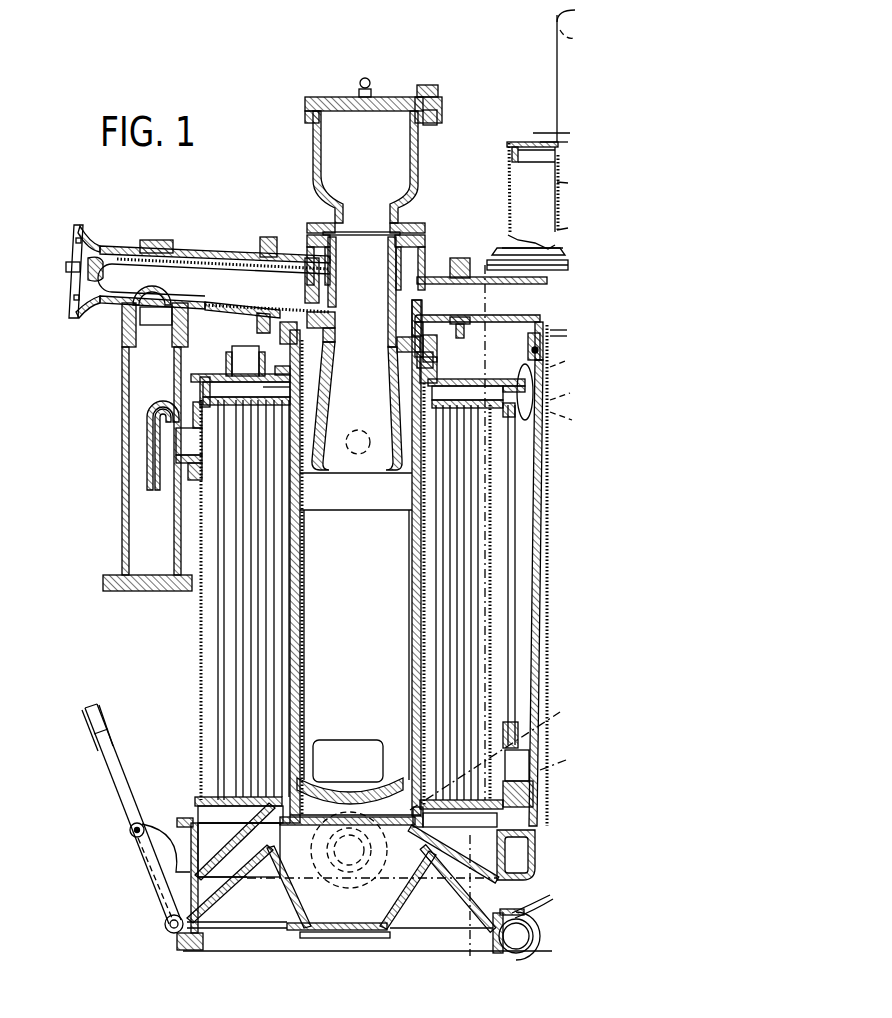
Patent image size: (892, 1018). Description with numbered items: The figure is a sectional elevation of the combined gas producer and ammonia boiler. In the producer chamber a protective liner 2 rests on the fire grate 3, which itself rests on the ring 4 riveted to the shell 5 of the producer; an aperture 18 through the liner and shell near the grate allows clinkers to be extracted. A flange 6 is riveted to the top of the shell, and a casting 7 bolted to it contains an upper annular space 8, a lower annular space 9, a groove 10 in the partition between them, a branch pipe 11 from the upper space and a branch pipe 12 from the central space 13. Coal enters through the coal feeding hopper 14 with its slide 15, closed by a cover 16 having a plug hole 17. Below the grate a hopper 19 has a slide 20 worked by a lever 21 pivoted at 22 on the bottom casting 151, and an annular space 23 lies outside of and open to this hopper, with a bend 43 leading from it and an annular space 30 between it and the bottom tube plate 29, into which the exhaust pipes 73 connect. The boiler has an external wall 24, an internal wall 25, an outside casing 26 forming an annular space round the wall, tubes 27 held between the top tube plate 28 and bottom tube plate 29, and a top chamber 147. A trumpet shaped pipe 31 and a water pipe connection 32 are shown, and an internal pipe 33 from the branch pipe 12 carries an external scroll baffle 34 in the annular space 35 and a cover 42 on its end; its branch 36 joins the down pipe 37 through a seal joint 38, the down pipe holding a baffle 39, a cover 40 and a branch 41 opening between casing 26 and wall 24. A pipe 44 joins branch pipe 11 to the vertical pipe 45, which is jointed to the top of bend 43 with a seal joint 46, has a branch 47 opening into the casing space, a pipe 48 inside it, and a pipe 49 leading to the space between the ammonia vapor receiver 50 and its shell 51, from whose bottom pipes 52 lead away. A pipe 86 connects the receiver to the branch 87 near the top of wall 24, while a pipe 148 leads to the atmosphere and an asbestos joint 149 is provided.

The protective liner 2 is at (300, 673).
The fire grate 3 is at (345, 784).
The ring 4 is at (364, 887).
The shell 5 is at (300, 647).
The flange 6 is at (290, 350).
The casting 7 is at (423, 256).
The upper annular space 8 is at (410, 298).
The lower annular space 9 is at (401, 378).
The groove 10 is at (408, 337).
The branch pipe 11 is at (482, 295).
The branch pipe 12 is at (333, 293).
The central space 13 is at (357, 406).
The coal feeding hopper 14 is at (365, 167).
The slide 15 is at (366, 225).
The cover 16 is at (334, 99).
The plug hole 17 is at (372, 86).
The aperture 18 is at (360, 745).
The hopper 19 is at (351, 887).
The slide 20 is at (346, 934).
The lever 21 is at (105, 773).
The pivot 22 is at (129, 832).
The annular space 23 is at (345, 878).
The external wall 24 is at (217, 652).
The internal wall 25 is at (298, 623).
The outside casing 26 is at (208, 680).
The tubes 27 is at (250, 704).
The top tube plate 28 is at (225, 390).
The bottom tube plate 29 is at (200, 790).
The annular space 30 is at (366, 846).
The trumpet shaped pipe 31 is at (83, 240).
The water pipe connection 32 is at (155, 243).
The internal pipe 33 is at (215, 311).
The scroll baffle 34 is at (190, 249).
The annular space 35 is at (103, 266).
The branch 36 is at (160, 298).
The down pipe 37 is at (122, 444).
The seal joint 38 is at (125, 342).
The baffle 39 is at (147, 470).
The cover 40 is at (170, 592).
The branch 41 is at (190, 441).
The cover 42 is at (84, 316).
The bend 43 is at (526, 900).
The pipe 44 is at (479, 322).
The vertical pipe 45 is at (541, 482).
The seal joint 46 is at (528, 347).
The branch 47 is at (477, 765).
The pipe 48 is at (549, 518).
The pipe 49 is at (552, 392).
The ammonia vapor receiver 50 is at (508, 199).
The shell 51 is at (486, 277).
The pipes 52 is at (533, 938).
The exhaust pipes 73 is at (375, 893).
The pipe 86 is at (557, 102).
The branch 87 is at (360, 454).
The top chamber 147 is at (263, 388).
The pipe 148 is at (245, 356).
The asbestos joint 149 is at (430, 370).
The bottom casting 151 is at (168, 905).